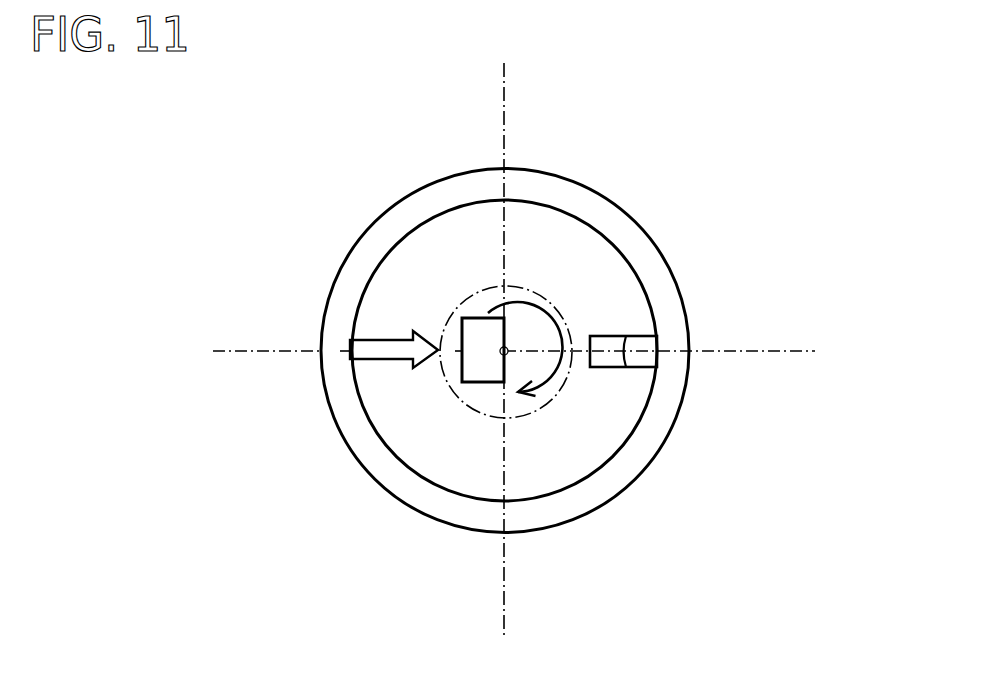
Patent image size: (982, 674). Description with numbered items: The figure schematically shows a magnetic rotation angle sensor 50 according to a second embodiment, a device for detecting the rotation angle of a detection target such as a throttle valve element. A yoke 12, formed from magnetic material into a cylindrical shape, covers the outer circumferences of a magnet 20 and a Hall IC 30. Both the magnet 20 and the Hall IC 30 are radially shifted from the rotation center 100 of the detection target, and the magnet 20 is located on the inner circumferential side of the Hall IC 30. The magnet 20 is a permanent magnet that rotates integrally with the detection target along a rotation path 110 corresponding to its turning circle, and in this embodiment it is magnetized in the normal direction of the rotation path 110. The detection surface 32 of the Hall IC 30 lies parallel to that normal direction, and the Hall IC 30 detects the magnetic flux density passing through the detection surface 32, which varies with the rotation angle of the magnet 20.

The yoke 12 is at (358, 268).
The magnet 20 is at (473, 363).
The Hall IC 30 is at (647, 345).
The detection surface 32 is at (625, 336).
The magnetic rotation angle sensor 50 is at (543, 163).
The rotation center 100 is at (506, 349).
The rotation path 110 is at (482, 287).